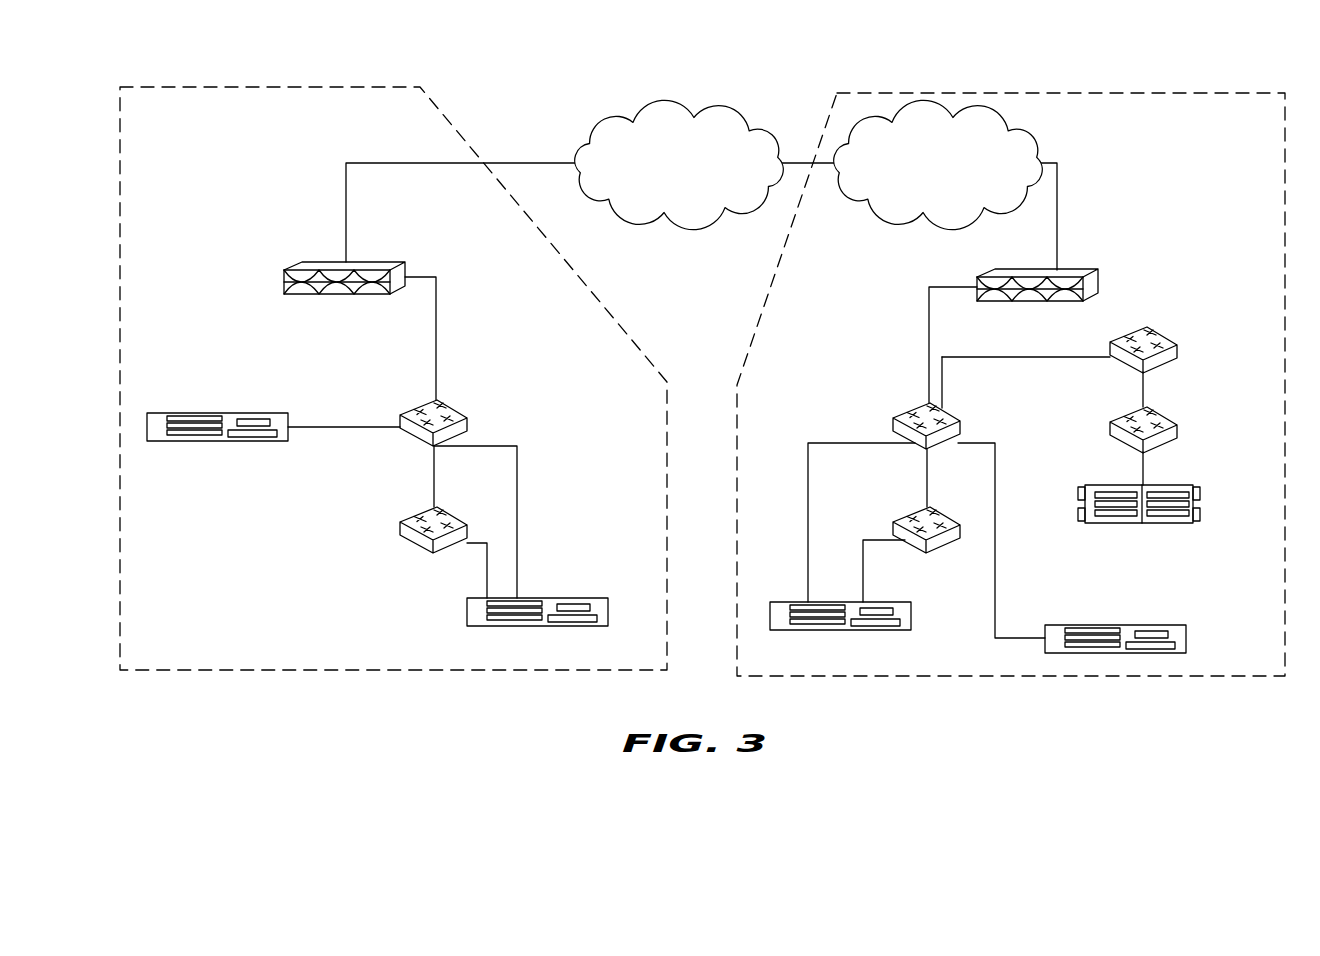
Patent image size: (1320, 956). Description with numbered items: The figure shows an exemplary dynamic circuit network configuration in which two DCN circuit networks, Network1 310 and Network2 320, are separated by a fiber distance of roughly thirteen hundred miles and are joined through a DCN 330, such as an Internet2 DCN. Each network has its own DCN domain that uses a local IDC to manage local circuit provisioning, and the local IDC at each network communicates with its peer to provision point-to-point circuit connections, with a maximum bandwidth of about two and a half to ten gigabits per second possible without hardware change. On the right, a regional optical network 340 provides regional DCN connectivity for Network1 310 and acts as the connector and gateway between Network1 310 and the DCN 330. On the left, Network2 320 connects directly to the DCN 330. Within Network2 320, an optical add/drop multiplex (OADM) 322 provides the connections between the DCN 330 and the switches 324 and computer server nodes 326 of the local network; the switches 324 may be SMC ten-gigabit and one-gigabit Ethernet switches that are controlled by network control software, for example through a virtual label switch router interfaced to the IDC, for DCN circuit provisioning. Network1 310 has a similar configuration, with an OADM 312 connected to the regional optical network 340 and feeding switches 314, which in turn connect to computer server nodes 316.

The Network1 310 is at (1178, 112).
The OADM 312 is at (1074, 268).
The switches 314 is at (958, 418).
The computer server nodes 316 is at (911, 615).
The Network2 320 is at (166, 100).
The optical add/drop multiplex (OADM) 322 is at (378, 262).
The switches 324 is at (413, 440).
The computer server nodes 326 is at (260, 441).
The DCN 330 is at (680, 110).
The regional optical network 340 is at (886, 112).